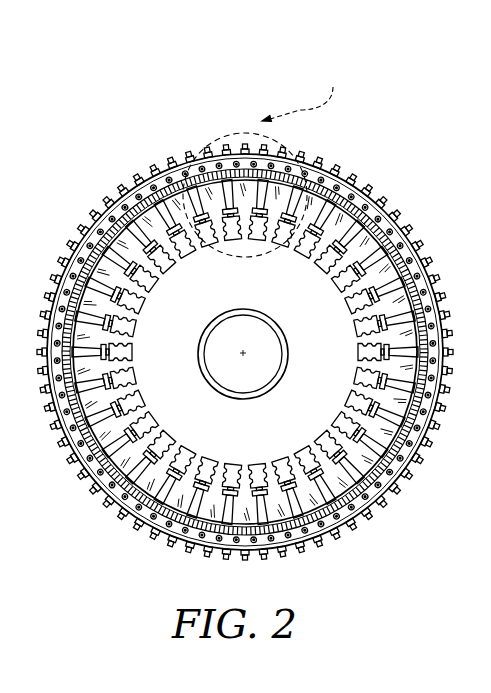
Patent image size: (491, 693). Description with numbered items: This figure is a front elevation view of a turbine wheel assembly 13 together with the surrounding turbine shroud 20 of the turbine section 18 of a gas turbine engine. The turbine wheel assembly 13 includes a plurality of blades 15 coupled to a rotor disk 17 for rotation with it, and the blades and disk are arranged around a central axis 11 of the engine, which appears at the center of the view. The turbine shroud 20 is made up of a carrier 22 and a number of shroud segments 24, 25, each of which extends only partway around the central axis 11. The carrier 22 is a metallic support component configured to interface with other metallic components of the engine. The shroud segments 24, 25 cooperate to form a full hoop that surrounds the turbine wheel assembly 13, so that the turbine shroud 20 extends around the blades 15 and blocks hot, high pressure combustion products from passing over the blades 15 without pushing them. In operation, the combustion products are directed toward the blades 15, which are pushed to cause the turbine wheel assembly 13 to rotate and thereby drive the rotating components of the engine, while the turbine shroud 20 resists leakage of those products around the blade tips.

The central axis 11 is at (243, 353).
The turbine wheel assembly 13 is at (246, 322).
The blades 15 is at (245, 333).
The rotor disk 17 is at (264, 352).
The turbine section 18 is at (93, 70).
The turbine shroud 20 is at (155, 110).
The carrier 22 is at (238, 348).
The shroud segment 24 is at (245, 327).
The shroud segment 25 is at (245, 327).